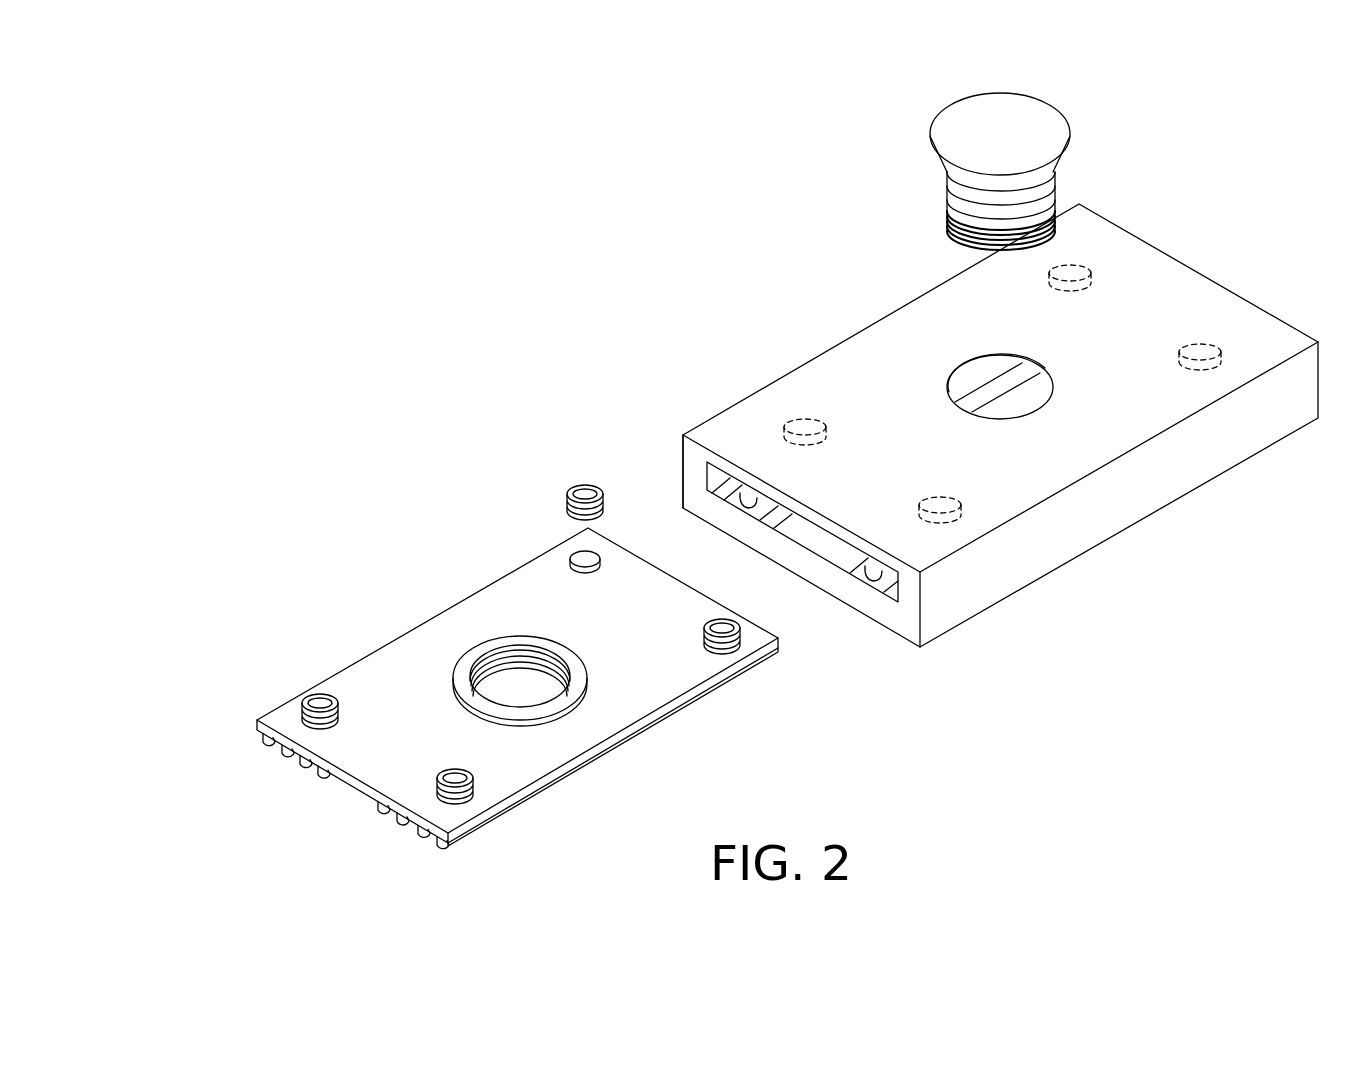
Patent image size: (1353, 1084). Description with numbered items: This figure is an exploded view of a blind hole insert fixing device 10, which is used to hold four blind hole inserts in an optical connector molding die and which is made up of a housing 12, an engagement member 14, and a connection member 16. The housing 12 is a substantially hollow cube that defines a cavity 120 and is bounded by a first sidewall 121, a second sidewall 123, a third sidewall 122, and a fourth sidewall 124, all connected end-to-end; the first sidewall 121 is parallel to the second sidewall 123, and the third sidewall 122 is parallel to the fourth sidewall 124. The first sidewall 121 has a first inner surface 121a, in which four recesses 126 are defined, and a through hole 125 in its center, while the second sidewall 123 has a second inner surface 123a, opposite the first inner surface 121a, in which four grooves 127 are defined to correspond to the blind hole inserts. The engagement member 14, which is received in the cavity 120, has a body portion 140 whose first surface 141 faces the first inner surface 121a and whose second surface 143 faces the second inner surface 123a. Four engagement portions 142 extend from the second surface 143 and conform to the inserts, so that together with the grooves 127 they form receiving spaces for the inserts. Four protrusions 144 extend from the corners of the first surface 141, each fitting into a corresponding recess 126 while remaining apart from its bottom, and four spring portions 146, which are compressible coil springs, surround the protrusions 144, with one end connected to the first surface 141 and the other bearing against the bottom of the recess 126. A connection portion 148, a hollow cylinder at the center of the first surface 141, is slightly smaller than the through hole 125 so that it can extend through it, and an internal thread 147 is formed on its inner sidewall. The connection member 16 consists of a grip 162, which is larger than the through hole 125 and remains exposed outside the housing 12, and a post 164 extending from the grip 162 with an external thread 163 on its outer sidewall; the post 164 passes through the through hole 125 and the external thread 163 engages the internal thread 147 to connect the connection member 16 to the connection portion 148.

The blind hole insert fixing device 10 is at (424, 233).
The housing 12 is at (873, 300).
The engagement member 14 is at (410, 521).
The connection member 16 is at (923, 172).
The cavity 120 is at (870, 574).
The first sidewall 121 is at (868, 385).
The first inner surface 121a is at (758, 498).
The third sidewall 122 is at (685, 475).
The second sidewall 123 is at (818, 577).
The second inner surface 123a is at (813, 537).
The fourth sidewall 124 is at (912, 597).
The through hole 125 is at (1030, 403).
The recesses 126 is at (1202, 344).
The grooves 127 is at (847, 565).
The body portion 140 is at (218, 683).
The first surface 141 is at (288, 713).
The engagement portions 142 is at (408, 826).
The second surface 143 is at (298, 761).
The protrusions 144 is at (580, 556).
The spring portions 146 is at (572, 491).
The internal thread 147 is at (474, 658).
The connection portion 148 is at (497, 640).
The grip 162 is at (1078, 155).
The external thread 163 is at (958, 218).
The post 164 is at (1058, 203).